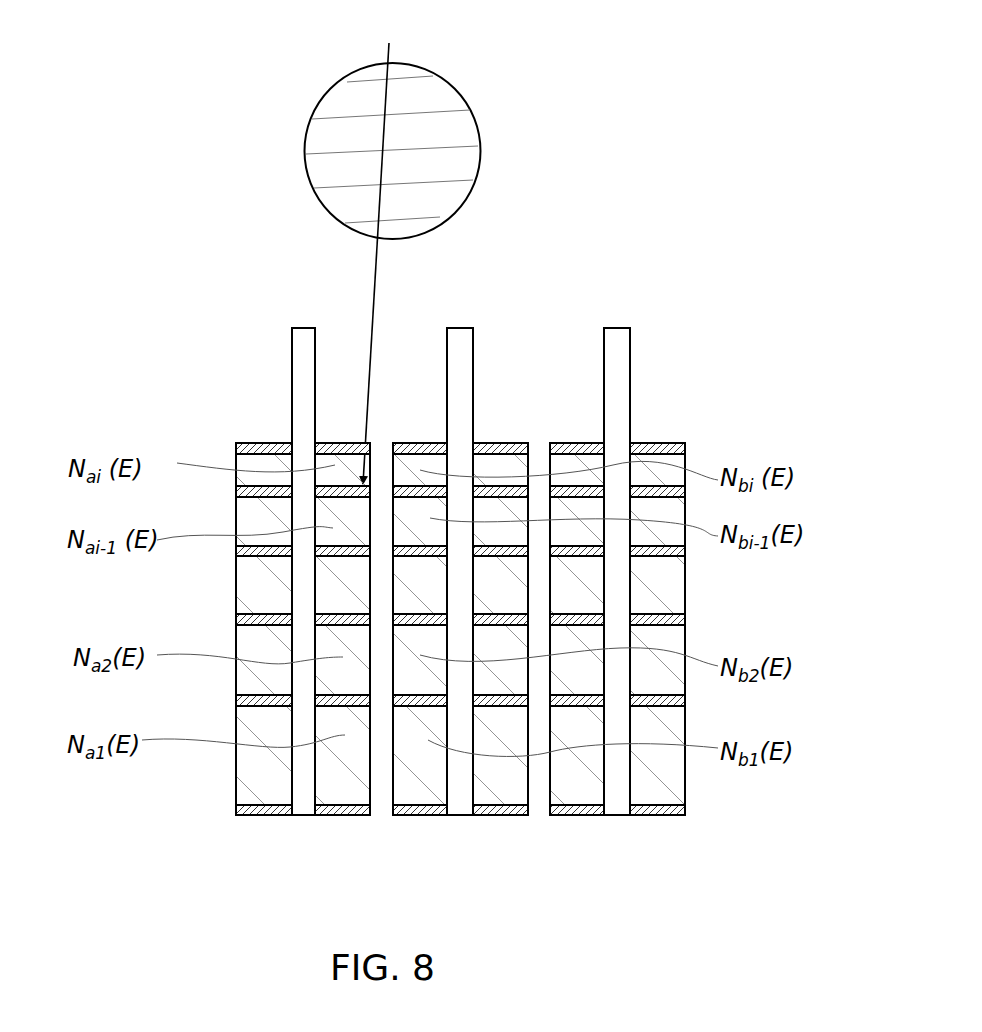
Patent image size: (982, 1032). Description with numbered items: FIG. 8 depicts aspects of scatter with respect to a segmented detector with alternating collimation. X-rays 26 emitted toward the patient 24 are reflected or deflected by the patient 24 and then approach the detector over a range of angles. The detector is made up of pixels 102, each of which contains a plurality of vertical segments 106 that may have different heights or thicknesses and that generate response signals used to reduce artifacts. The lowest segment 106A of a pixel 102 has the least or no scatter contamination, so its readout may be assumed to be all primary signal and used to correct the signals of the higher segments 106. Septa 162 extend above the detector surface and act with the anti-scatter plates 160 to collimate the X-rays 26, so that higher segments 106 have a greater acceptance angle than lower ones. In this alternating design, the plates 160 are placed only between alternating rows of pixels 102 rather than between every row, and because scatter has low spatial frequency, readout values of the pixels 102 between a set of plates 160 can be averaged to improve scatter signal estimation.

The patient 24 is at (505, 114).
The X-rays 26 is at (378, 283).
The pixel 102 is at (354, 829).
The vertical segment 106 is at (222, 473).
The bottom segment 106A is at (226, 783).
The anti-scatter plate 160 is at (473, 775).
The septa 162 is at (631, 372).